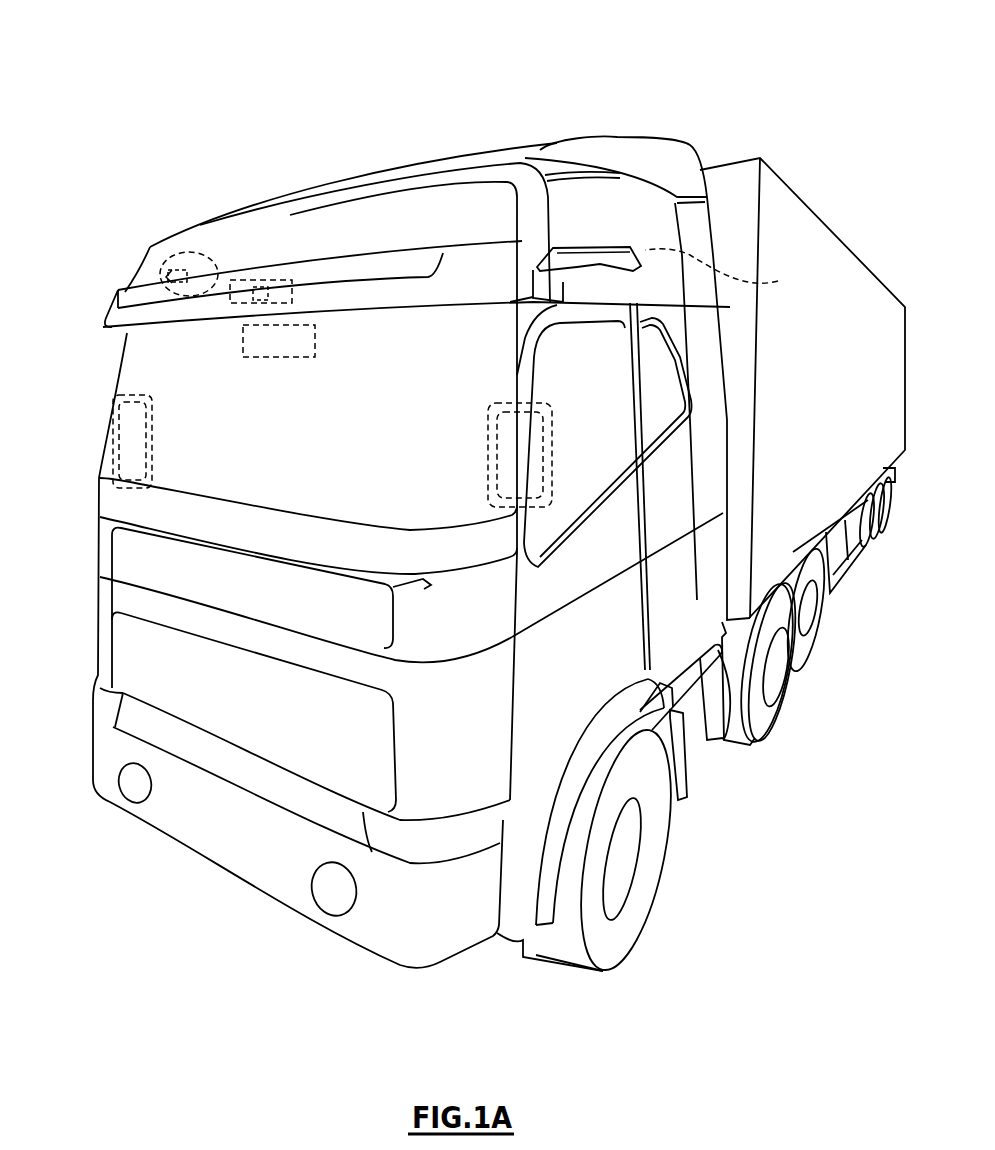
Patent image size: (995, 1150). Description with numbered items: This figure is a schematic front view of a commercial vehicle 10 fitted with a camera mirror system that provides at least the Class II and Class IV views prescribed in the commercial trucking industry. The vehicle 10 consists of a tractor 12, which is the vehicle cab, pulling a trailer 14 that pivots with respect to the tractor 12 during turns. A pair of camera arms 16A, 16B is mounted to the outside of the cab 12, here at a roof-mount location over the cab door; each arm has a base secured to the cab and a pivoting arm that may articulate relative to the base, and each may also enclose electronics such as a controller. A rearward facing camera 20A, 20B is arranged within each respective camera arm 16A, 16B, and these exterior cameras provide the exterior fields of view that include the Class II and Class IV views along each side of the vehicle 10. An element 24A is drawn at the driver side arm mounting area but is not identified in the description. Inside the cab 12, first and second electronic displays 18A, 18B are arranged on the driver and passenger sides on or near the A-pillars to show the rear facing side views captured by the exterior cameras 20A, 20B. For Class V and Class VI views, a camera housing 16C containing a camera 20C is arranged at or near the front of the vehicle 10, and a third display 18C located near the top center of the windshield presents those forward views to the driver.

The commercial vehicle 10 is at (880, 62).
The tractor 12 is at (86, 552).
The trailer 14 is at (850, 285).
The camera arm 16A is at (582, 258).
The camera arm 16B is at (170, 258).
The camera housing 16C is at (254, 295).
The first electronic display 18A is at (497, 448).
The second electronic display 18B is at (135, 428).
The third display 18C is at (316, 337).
The rearward facing camera 20A is at (737, 271).
The rearward facing camera 20B is at (162, 262).
The camera 20C is at (250, 302).
The mirror mount 24A is at (545, 282).